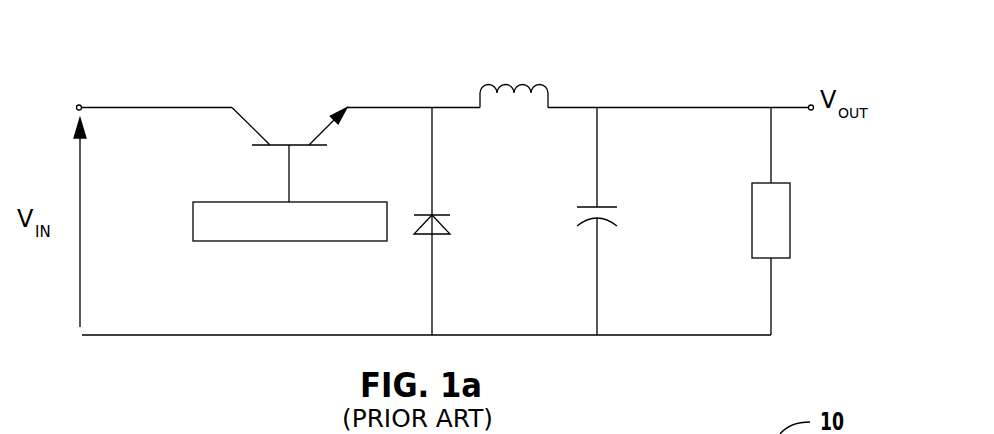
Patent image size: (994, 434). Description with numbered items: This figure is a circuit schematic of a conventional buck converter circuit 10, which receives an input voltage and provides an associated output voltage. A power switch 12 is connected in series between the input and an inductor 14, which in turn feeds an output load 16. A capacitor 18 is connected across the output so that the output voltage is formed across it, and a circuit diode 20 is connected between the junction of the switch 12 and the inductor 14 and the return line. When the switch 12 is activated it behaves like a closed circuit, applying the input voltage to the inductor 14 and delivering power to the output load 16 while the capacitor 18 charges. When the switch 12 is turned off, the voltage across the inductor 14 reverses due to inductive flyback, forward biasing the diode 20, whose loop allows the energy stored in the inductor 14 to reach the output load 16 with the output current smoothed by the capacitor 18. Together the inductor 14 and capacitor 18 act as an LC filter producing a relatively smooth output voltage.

The buck converter circuit 10 is at (686, 44).
The power switch 12 is at (279, 94).
The inductor 14 is at (490, 85).
The output load 16 is at (790, 213).
The capacitor 18 is at (595, 210).
The circuit diode 20 is at (433, 218).